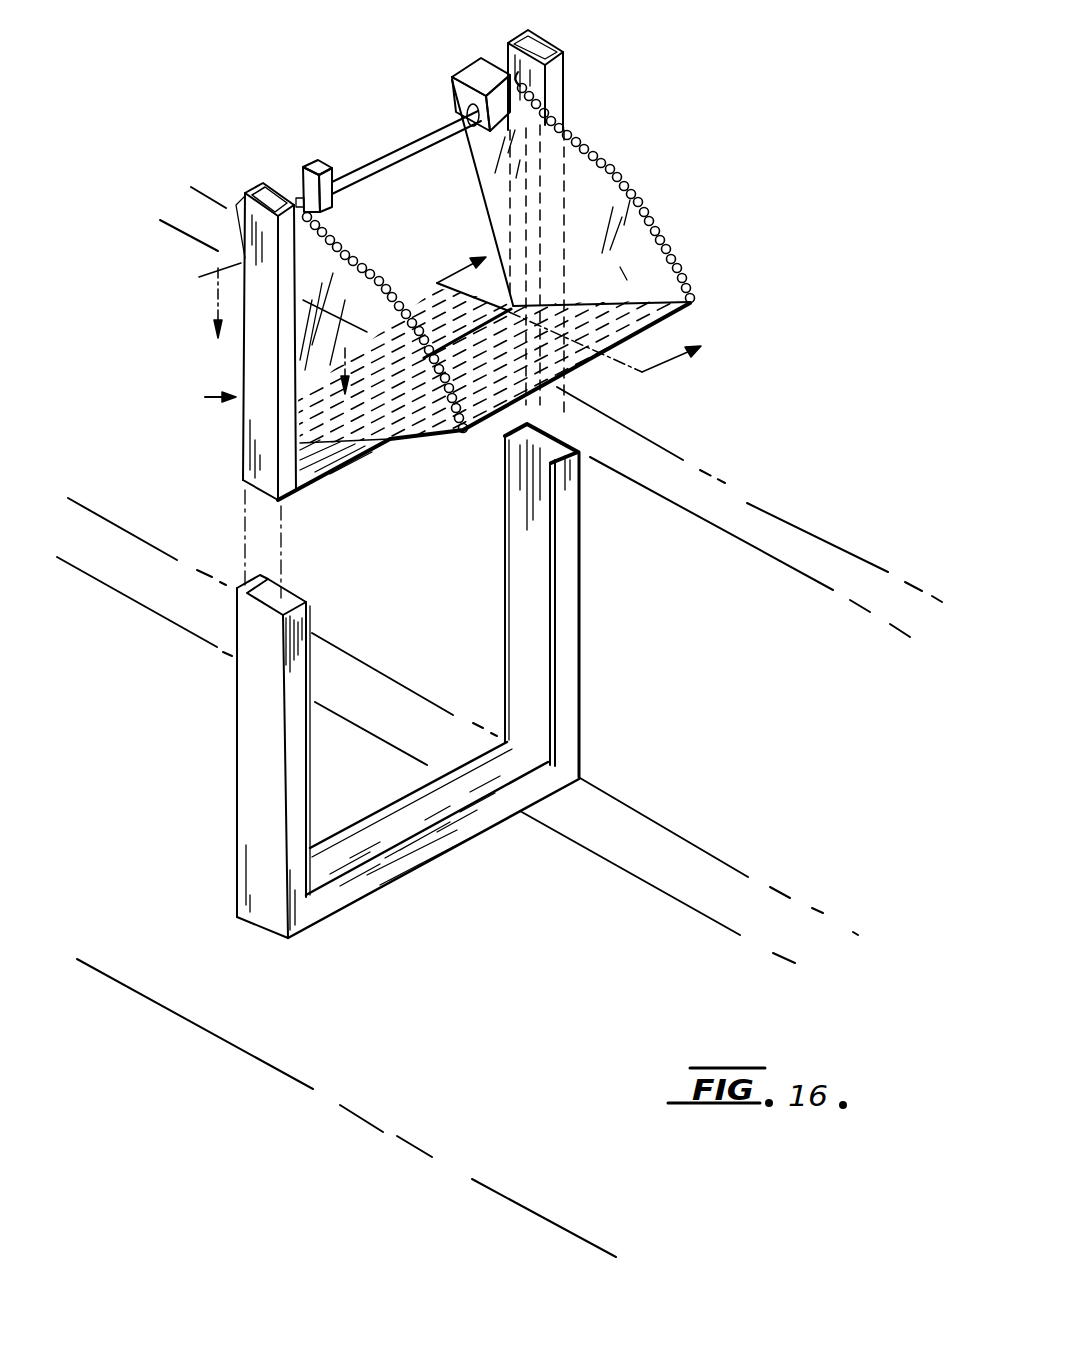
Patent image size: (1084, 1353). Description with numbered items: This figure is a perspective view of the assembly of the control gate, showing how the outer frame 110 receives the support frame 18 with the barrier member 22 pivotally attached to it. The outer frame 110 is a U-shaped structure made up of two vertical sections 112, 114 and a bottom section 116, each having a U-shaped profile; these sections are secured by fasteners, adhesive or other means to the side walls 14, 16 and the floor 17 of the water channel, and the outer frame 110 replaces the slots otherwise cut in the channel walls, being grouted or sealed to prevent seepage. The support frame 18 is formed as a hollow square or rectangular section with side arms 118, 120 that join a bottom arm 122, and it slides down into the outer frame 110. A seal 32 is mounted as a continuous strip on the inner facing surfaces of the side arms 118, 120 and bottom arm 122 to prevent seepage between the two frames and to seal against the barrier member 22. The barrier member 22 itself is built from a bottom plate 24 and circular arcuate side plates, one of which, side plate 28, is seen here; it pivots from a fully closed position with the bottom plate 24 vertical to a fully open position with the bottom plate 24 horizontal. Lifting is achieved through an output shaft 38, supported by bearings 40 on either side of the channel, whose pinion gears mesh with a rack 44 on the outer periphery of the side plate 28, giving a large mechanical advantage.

The side wall 14 is at (688, 850).
The side wall 16 is at (757, 497).
The floor 17 is at (274, 328).
The support frame 18 is at (440, 334).
The barrier member 22 is at (692, 320).
The bottom plate 24 is at (568, 350).
The side plate 28 is at (627, 217).
The seal 32 is at (607, 160).
The output shaft 38 is at (421, 126).
The bearing 40 is at (309, 148).
The rack 44 is at (676, 262).
The outer frame 110 is at (415, 685).
The vertical section 112 is at (243, 800).
The vertical section 114 is at (580, 643).
The bottom section 116 is at (377, 893).
The side arm 118 is at (257, 432).
The side arm 120 is at (558, 101).
The bottom arm 122 is at (317, 482).